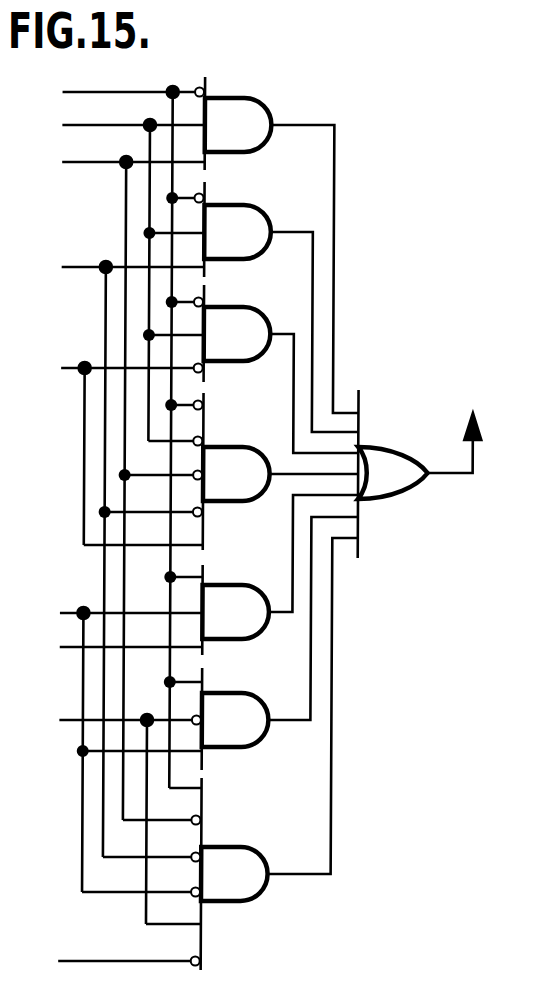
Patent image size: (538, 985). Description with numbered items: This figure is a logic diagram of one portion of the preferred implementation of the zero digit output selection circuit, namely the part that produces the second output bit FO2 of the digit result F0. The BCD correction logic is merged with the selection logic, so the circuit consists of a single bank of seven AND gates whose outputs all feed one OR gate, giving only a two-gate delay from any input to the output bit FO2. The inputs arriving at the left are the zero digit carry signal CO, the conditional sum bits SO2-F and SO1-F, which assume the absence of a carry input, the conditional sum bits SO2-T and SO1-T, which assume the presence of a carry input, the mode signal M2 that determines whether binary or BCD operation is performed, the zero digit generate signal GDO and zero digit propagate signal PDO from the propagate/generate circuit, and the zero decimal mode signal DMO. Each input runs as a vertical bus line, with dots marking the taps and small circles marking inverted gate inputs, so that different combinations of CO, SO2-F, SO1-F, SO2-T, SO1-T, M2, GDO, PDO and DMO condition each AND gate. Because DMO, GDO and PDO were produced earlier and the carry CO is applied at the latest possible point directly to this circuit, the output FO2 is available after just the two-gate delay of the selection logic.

The zero digit carry signal CO is at (101, 92).
The second bit of the zero digit conditional false sum SO2-F is at (105, 129).
The zero digit generate signal GDO is at (105, 163).
The mode signal M2 is at (106, 269).
The first bit of the zero digit conditional false sum SO1-F is at (99, 374).
The second bit of the zero digit conditional true sum SO2-T is at (102, 615).
The zero decimal mode signal DMO is at (102, 647).
The first bit of the zero digit conditional true sum SO1-T is at (97, 723).
The zero digit propagate signal PDO is at (97, 961).
The second bit of the zero digit output signal FO2 is at (463, 423).